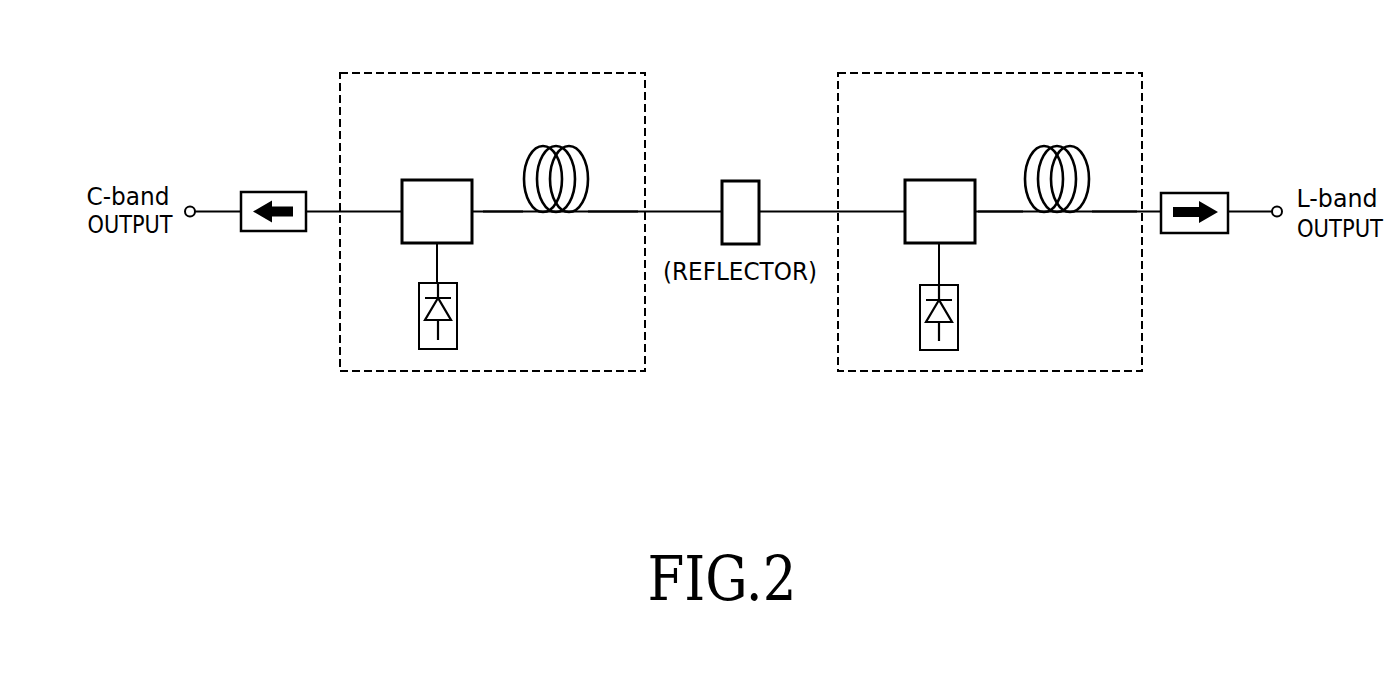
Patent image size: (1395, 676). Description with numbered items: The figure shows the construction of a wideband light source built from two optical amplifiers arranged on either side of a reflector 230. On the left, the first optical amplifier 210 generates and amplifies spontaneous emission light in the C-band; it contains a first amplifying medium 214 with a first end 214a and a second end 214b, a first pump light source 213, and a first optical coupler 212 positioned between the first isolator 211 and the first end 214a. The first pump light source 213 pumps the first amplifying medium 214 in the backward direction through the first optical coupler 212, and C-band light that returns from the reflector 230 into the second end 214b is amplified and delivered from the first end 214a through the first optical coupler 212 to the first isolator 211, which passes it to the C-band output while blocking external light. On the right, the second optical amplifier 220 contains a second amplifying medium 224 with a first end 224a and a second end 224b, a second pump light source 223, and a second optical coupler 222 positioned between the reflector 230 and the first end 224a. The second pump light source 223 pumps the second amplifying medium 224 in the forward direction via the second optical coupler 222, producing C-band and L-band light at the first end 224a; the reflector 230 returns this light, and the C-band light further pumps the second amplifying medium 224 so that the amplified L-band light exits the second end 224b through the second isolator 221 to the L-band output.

The first optical amplifier 210 is at (423, 73).
The first isolator 211 is at (273, 192).
The first optical coupler 212 is at (437, 180).
The first pump light source 213 is at (419, 317).
The first amplifying medium 214 is at (627, 267).
The first end of the first amplifying medium 214a is at (553, 222).
The second end of the first amplifying medium 214b is at (638, 222).
The second optical amplifier 220 is at (1032, 73).
The second isolator 221 is at (1193, 193).
The second optical coupler 222 is at (940, 180).
The second pump light source 223 is at (920, 317).
The second amplifying medium 224 is at (1127, 267).
The first end of the second amplifying medium 224a is at (978, 222).
The second end of the second amplifying medium 224b is at (1063, 222).
The reflector 230 is at (738, 181).